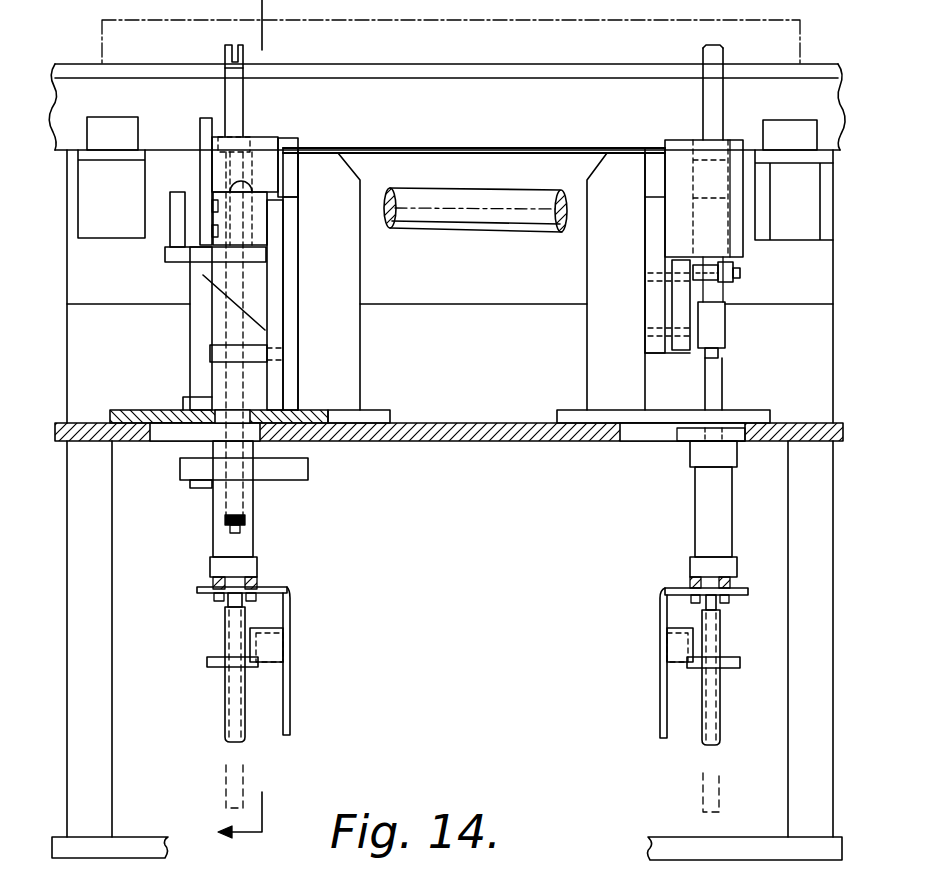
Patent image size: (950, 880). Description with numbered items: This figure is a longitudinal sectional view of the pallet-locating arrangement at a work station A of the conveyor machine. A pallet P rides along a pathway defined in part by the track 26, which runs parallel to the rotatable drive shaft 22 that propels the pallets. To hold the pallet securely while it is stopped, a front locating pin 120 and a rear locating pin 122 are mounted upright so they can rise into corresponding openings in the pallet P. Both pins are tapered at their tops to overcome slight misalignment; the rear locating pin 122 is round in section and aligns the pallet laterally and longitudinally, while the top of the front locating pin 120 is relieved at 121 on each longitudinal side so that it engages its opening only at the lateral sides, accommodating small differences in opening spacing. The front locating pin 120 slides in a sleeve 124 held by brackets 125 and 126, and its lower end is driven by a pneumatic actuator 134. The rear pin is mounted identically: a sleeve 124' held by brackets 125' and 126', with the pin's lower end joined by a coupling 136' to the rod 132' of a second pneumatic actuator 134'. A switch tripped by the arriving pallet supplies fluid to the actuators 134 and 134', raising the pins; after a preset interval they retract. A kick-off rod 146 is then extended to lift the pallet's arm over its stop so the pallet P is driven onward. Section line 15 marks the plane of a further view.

The drive shaft 22 is at (472, 213).
The track 26 is at (815, 76).
The front locating pin 120 is at (236, 102).
The relieved portion 121 is at (222, 56).
The rear locating pin 122 is at (716, 104).
The sleeve 124 is at (290, 147).
The sleeve 124' is at (682, 172).
The bracket 125 is at (474, 266).
The bracket 125' is at (625, 234).
The bracket 126 is at (369, 281).
The bracket 126' is at (591, 281).
The rod 132' is at (757, 399).
The pneumatic actuator 134 is at (262, 624).
The pneumatic actuator 134' is at (734, 626).
The coupling 136' is at (725, 307).
The kick-off rod 146 is at (238, 190).
The section line 15- 15 is at (223, 424).
The pallet P is at (805, 24).
The work station A is at (840, 270).